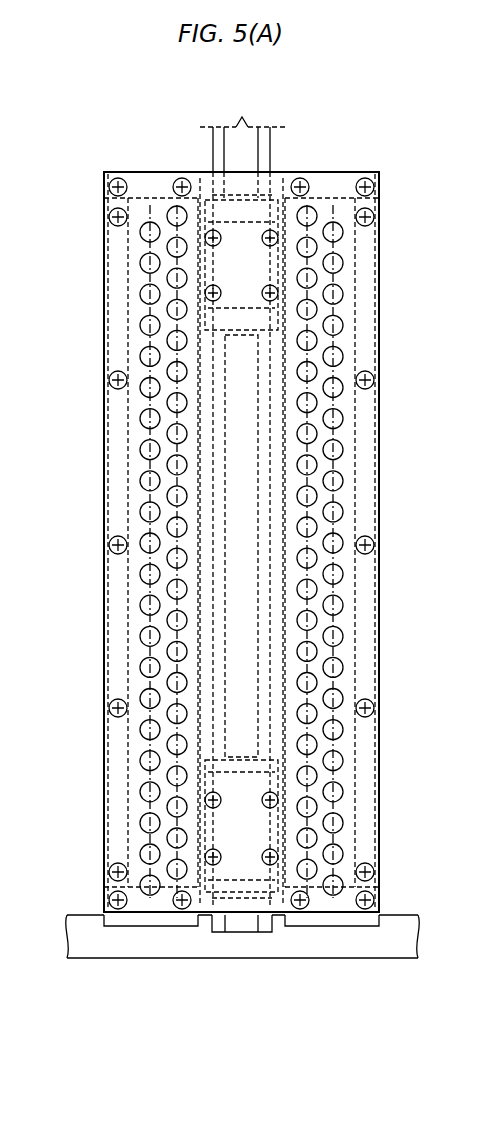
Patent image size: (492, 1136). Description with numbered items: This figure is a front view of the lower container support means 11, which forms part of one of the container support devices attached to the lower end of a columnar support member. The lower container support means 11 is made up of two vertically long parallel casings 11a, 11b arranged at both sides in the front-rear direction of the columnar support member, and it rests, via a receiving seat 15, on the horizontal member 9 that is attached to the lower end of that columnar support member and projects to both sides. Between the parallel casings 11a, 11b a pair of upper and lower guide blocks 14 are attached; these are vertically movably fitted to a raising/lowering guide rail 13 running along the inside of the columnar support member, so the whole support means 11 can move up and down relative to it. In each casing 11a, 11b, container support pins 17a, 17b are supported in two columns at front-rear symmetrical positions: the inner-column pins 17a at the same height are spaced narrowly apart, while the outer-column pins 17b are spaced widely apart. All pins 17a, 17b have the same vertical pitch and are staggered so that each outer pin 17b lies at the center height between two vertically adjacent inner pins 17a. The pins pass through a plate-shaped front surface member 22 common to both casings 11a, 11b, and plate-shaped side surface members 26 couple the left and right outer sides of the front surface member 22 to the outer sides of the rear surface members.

The horizontal member 9 is at (242, 947).
The lower container support means 11 is at (349, 174).
The casing 11a is at (104, 418).
The casing 11b is at (380, 290).
The raising/lowering guide rail 13 is at (245, 160).
The guide block 14 is at (260, 268).
The receiving seat 15 is at (145, 920).
The container support pin 17a is at (167, 309).
The container support pin 17b is at (141, 356).
The front surface member 22 is at (108, 545).
The side surface member 26 is at (138, 562).